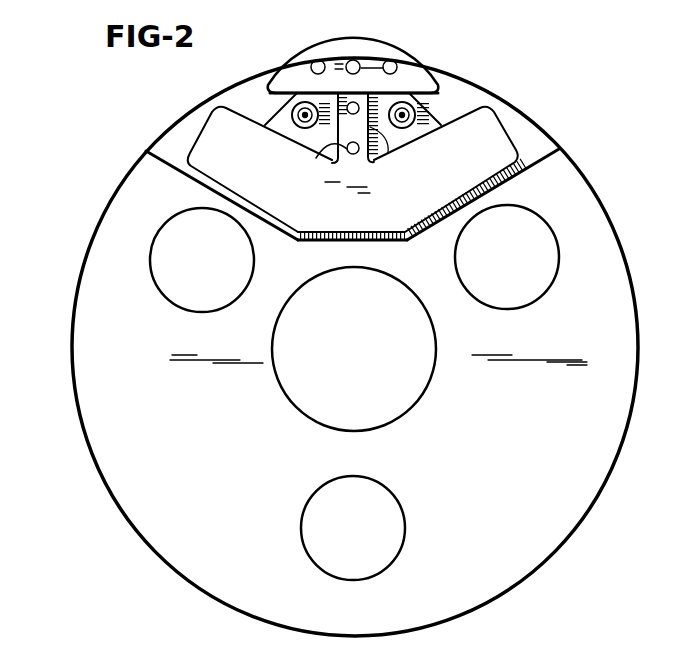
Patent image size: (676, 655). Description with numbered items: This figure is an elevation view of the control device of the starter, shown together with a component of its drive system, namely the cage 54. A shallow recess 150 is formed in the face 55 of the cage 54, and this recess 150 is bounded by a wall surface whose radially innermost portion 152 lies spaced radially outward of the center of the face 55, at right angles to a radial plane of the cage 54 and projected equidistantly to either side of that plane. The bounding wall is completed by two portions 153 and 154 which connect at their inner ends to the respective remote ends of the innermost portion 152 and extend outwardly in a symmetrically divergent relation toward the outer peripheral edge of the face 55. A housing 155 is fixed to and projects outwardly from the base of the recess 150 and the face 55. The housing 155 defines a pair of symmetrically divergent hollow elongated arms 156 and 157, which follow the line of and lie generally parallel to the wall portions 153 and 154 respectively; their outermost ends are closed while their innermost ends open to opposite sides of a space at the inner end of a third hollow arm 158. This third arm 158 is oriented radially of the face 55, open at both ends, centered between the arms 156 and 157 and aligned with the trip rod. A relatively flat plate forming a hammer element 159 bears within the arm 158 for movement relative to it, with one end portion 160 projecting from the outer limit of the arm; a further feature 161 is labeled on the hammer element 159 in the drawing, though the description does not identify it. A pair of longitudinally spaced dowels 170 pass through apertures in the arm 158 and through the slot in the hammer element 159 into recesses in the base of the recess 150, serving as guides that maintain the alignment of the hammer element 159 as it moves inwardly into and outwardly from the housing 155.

The cage 54 is at (66, 278).
The face 55 is at (478, 432).
The shallow recess 150 is at (358, 145).
The radially innermost portion 152 is at (376, 233).
The wall surface portion 153 is at (156, 158).
The wall surface portion 154 is at (546, 158).
The housing 155 is at (512, 122).
The hollow elongated arm 156 is at (234, 104).
The hollow elongated arm 157 is at (488, 186).
The third hollow arm 158 is at (388, 152).
The hammer element 159 is at (396, 43).
The end portion 160 is at (289, 71).
The cap apertures 161 is at (347, 46).
The dowels 170 is at (342, 147).